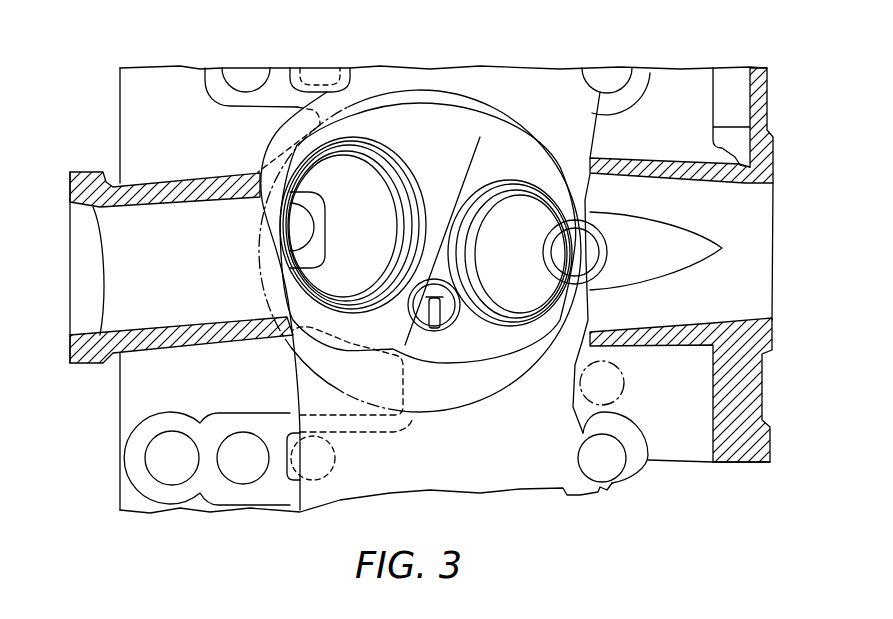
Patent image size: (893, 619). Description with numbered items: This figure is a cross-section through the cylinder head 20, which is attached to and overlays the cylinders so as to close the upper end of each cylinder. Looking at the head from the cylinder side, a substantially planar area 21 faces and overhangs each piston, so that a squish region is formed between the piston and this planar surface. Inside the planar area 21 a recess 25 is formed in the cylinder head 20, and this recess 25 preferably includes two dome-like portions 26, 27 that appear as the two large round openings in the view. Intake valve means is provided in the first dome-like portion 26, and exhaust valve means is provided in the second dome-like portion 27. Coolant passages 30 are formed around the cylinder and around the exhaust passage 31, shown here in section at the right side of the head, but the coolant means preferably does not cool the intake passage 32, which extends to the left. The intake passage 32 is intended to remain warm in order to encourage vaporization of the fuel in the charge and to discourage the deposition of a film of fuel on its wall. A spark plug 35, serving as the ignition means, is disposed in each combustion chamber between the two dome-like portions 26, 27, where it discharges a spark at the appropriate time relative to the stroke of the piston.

The cylinder head 20 is at (104, 432).
The planar area 21 is at (436, 400).
The recess 25 is at (463, 140).
The dome-like portion 26 is at (449, 163).
The dome-like portion 27 is at (506, 177).
The coolant passages 30 is at (678, 129).
The exhaust passage 31 is at (736, 308).
The intake passage 32 is at (186, 278).
The spark plug 35 is at (438, 322).